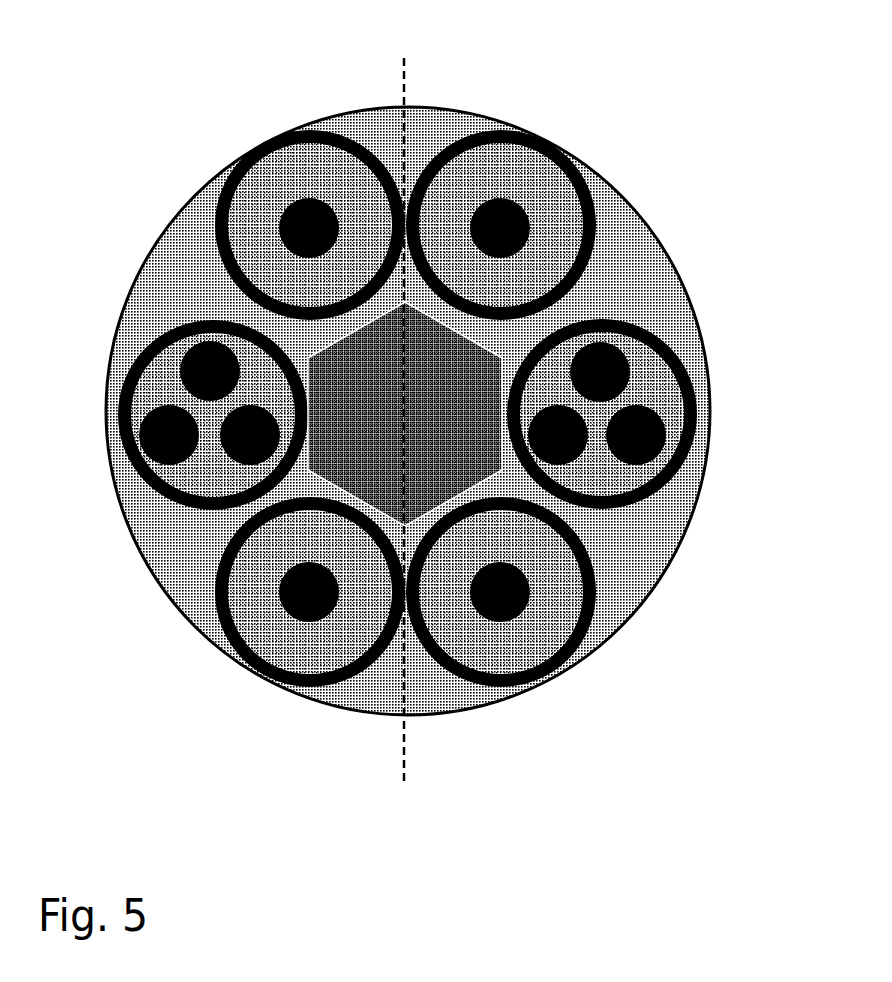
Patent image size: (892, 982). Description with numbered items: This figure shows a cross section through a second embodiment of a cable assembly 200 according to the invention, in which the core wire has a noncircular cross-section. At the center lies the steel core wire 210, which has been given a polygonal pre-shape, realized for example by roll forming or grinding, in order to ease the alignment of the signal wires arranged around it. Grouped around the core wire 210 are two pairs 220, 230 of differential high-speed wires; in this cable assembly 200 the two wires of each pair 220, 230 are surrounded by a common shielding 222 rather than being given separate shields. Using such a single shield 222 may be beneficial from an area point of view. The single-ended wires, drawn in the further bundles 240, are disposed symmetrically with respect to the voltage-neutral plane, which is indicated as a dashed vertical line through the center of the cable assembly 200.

The cable assembly 200 is at (428, 424).
The steel core wire 210 is at (362, 406).
The pair of differential wires 220 is at (327, 200).
The common shielding 222 is at (573, 155).
The pair of differential wires 230 is at (463, 607).
The sensing conductor bundles 240 is at (232, 348).